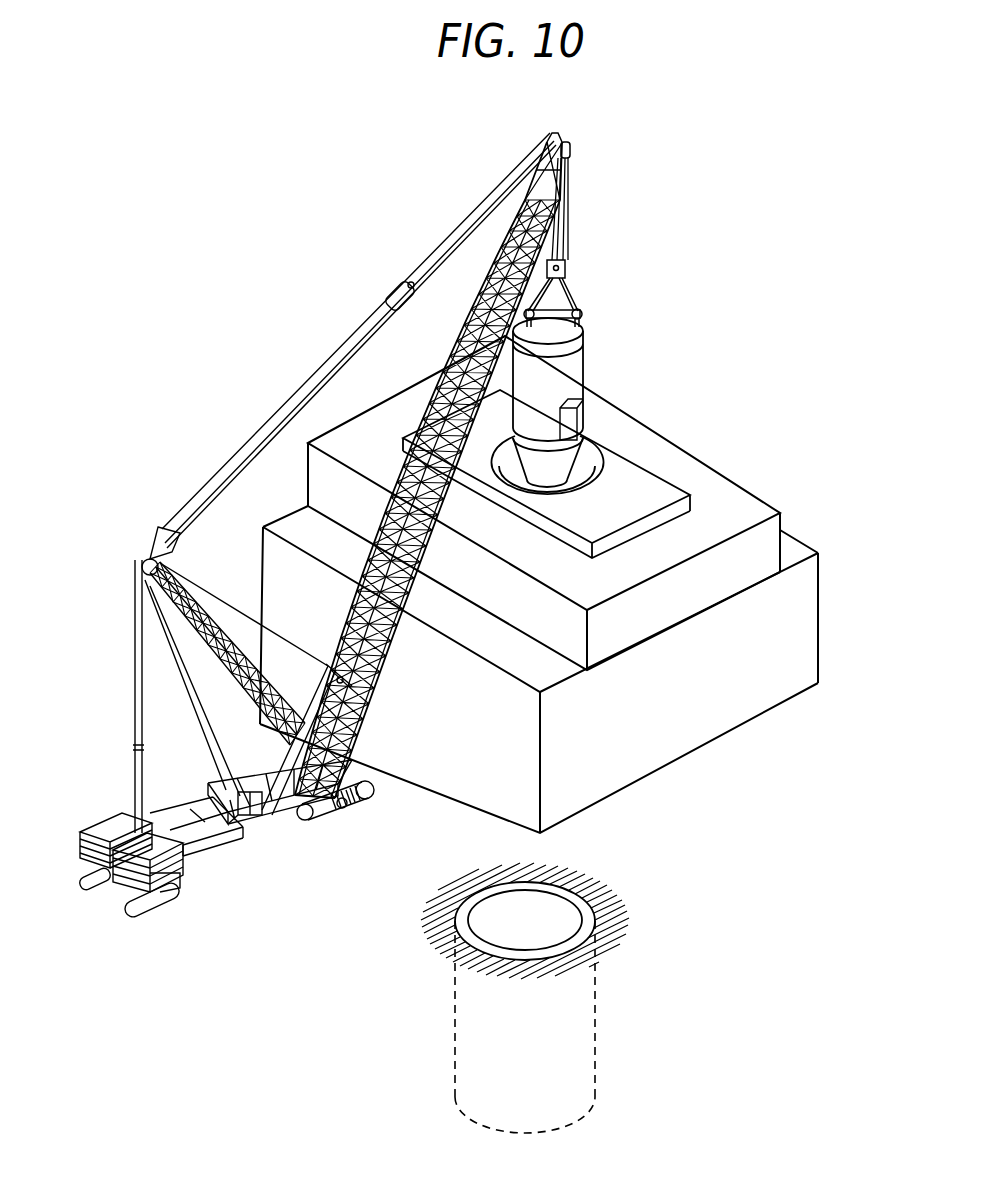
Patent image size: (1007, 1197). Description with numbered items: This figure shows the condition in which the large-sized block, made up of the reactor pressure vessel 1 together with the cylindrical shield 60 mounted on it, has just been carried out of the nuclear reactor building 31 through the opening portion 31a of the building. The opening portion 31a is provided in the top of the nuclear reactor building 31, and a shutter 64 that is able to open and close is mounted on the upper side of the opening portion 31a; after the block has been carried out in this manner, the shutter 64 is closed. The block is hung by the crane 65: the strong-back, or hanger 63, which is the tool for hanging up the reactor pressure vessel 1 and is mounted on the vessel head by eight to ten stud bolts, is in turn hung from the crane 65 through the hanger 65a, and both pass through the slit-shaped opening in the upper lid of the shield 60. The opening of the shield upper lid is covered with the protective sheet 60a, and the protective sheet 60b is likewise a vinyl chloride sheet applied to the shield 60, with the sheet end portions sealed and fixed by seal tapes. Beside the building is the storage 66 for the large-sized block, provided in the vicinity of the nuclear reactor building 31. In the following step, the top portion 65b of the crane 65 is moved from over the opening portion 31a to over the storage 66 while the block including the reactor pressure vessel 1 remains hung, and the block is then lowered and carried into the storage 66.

The reactor pressure vessel 1 is at (708, 433).
The nuclear reactor building 31 is at (782, 540).
The opening portion 31a is at (587, 467).
The shield 60 is at (610, 473).
The protective sheet 60a is at (567, 335).
The protective sheet 60b is at (552, 468).
The strong-back (hanger) 63 is at (575, 290).
The shutter 64 is at (692, 497).
The crane 65 is at (453, 330).
The hanger 65a is at (566, 216).
The top portion of the crane 65b is at (573, 149).
The storage 66 is at (600, 876).